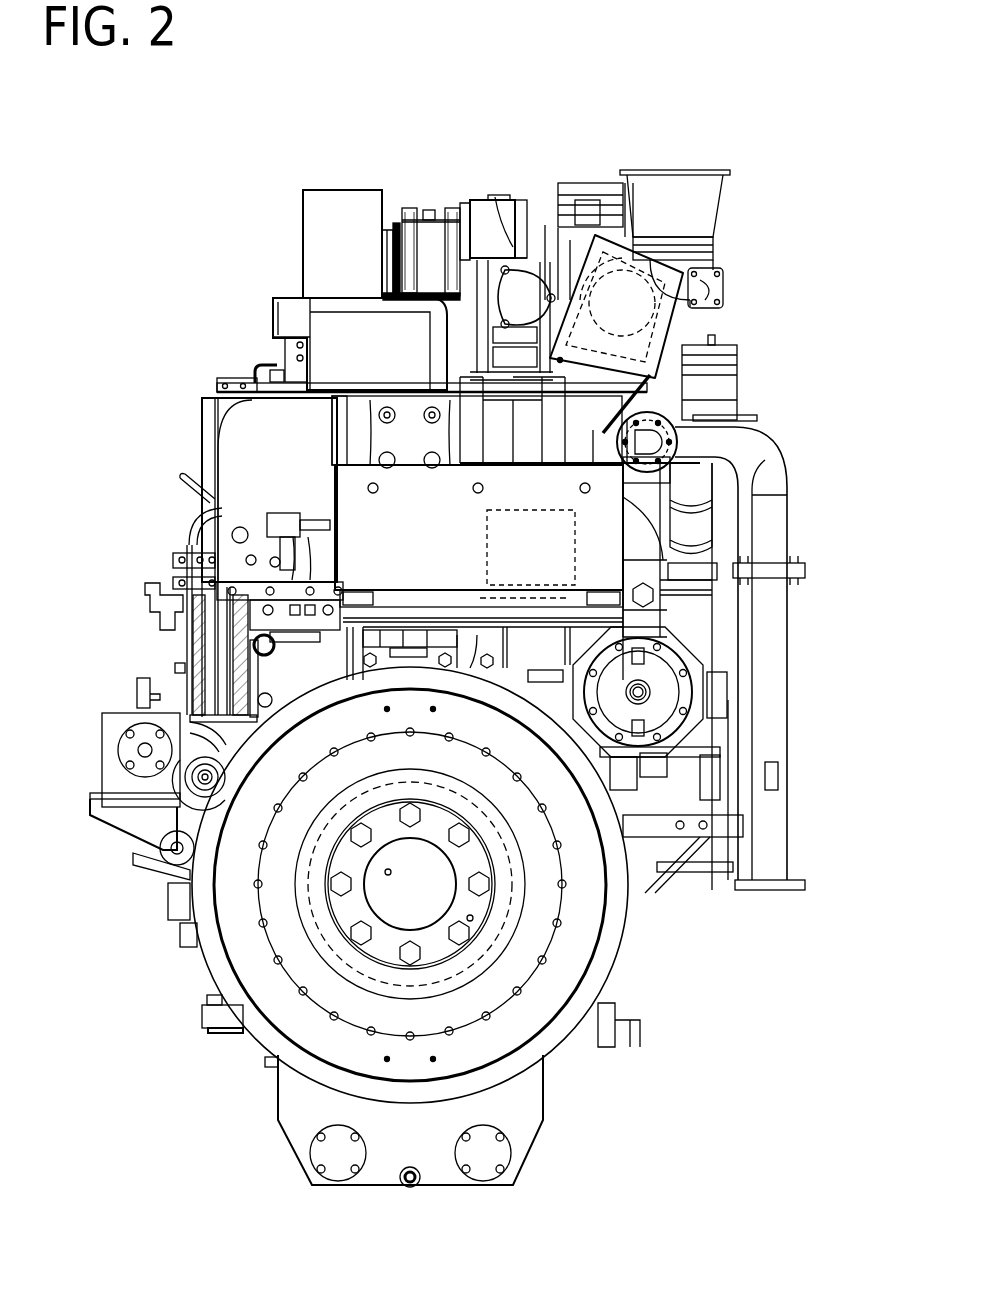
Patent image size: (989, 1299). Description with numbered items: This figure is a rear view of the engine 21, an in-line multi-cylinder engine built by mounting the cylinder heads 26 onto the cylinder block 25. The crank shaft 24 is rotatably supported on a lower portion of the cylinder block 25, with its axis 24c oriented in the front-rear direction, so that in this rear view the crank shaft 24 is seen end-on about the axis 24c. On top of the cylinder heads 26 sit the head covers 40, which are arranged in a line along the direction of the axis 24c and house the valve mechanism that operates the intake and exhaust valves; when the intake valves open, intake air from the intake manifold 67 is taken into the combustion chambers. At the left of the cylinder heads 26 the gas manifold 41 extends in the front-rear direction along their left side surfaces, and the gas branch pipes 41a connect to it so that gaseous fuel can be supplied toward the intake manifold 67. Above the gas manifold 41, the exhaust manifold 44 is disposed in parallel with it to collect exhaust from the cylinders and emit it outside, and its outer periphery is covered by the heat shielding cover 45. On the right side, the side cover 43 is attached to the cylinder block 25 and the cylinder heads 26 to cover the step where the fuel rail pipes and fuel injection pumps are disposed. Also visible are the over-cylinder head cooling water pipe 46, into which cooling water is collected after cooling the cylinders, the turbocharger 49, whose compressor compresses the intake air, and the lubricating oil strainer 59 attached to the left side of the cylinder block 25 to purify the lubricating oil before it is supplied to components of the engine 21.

The engine 21 is at (434, 182).
The crank shaft 24 is at (400, 903).
The axis 24c is at (412, 886).
The cylinder block 25 is at (211, 1048).
The cylinder heads 26 is at (390, 385).
The head covers 40 is at (350, 296).
The gas manifold 41 is at (680, 446).
The gas branch pipes 41a is at (737, 390).
The side cover 43 is at (235, 433).
The exhaust manifold 44 is at (687, 327).
The heat shielding cover 45 is at (660, 257).
The over-cylinder head cooling water pipe 46 is at (495, 195).
The turbocharger 49 is at (346, 190).
The lubricating oil strainer 59 is at (667, 697).
The intake manifold 67 is at (722, 517).